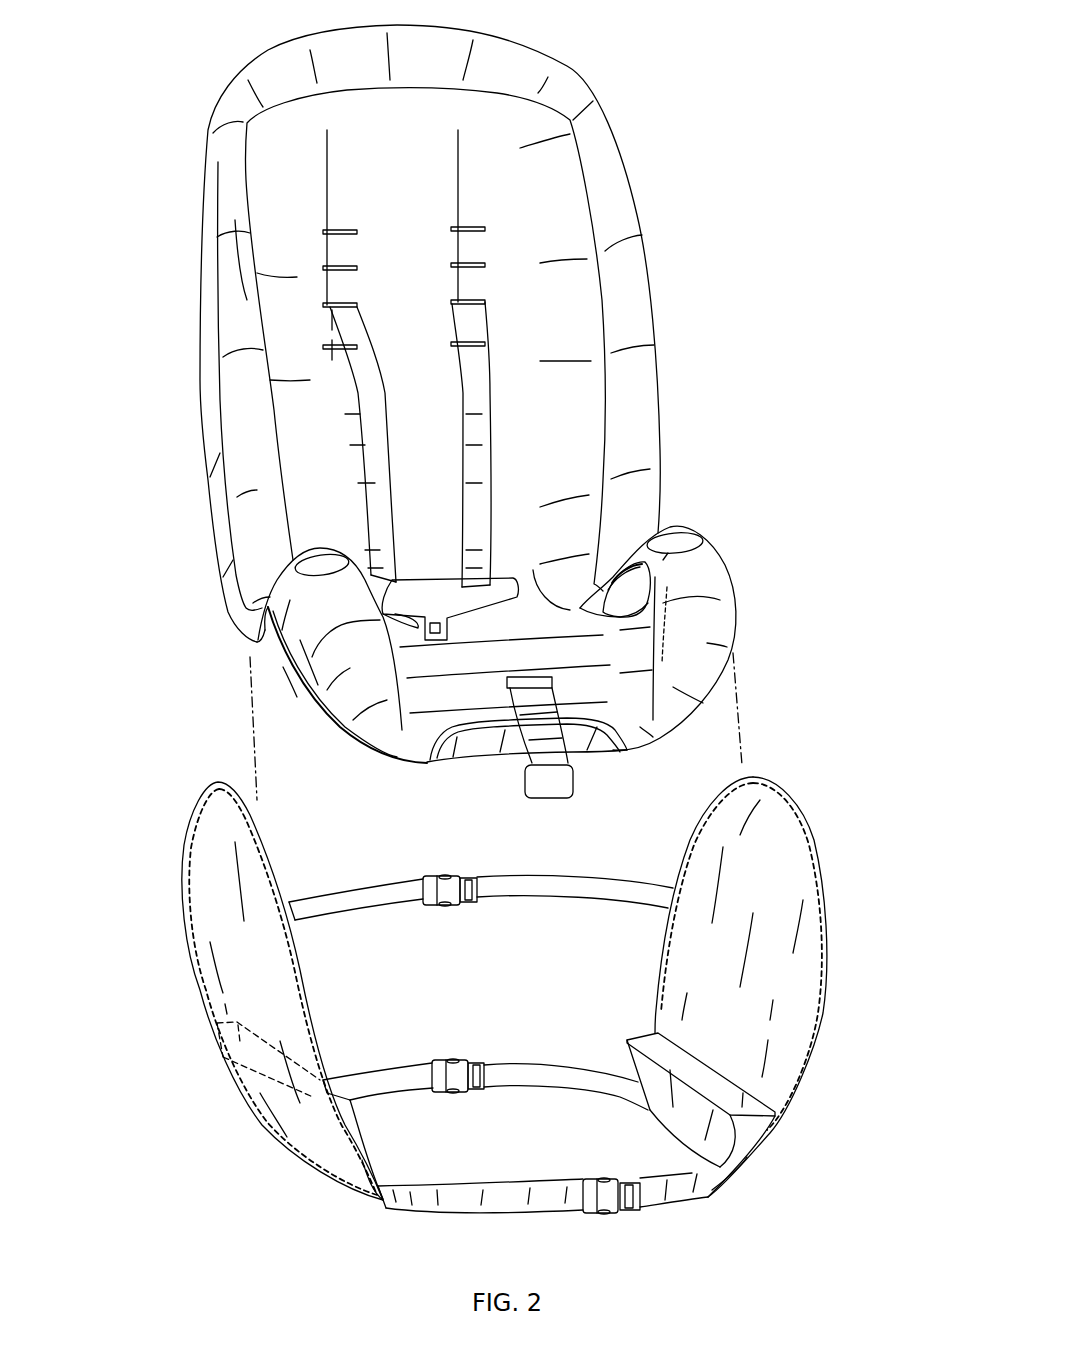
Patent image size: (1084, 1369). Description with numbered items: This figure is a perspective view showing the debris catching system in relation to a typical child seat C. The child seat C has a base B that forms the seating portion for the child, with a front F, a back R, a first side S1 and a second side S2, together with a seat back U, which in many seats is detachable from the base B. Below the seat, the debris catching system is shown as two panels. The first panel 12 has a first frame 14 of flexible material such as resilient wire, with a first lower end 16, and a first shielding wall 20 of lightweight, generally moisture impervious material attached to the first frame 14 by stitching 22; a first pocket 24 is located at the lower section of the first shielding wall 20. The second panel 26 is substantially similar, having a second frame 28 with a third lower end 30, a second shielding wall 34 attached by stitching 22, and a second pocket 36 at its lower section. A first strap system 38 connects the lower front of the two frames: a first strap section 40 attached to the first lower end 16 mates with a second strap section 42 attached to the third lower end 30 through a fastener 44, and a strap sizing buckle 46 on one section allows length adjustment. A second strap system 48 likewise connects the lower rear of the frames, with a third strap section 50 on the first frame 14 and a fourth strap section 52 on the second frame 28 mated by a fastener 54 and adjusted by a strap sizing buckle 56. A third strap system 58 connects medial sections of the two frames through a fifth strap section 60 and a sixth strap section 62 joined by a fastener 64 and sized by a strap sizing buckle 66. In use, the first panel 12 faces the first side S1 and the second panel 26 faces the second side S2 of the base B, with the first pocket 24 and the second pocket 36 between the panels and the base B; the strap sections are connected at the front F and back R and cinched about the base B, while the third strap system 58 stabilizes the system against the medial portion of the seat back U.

The child seat C is at (165, 353).
The seat back U is at (568, 214).
The base B is at (755, 585).
The back R is at (267, 610).
The front F is at (700, 753).
The first side S1 is at (292, 673).
The second side S2 is at (735, 680).
The first panel 12 is at (250, 1001).
The first frame 14 is at (220, 1053).
The first lower end 16 is at (382, 1202).
The first shielding wall 20 is at (215, 919).
The stitching 22 is at (183, 859).
The first pocket 24 is at (343, 1110).
The second panel 26 is at (765, 978).
The second frame 28 is at (826, 925).
The third lower end 30 is at (752, 1162).
The second shielding wall 34 is at (773, 837).
The second pocket 36 is at (742, 1118).
The first strap system 38 is at (543, 1203).
The first strap section 40 is at (462, 1192).
The second strap section 42 is at (667, 1192).
The fastener 44 is at (583, 1195).
The strap sizing buckle 46 is at (625, 1212).
The second strap system 48 is at (485, 1030).
The third strap section 50 is at (372, 1078).
The fourth strap section 52 is at (575, 1068).
The fastener 54 is at (450, 1060).
The strap sizing buckle 56 is at (476, 1062).
The third strap system 58 is at (481, 862).
The fifth strap section 60 is at (370, 887).
The sixth strap section 62 is at (612, 882).
The fastener 64 is at (435, 877).
The strap sizing buckle 66 is at (470, 877).